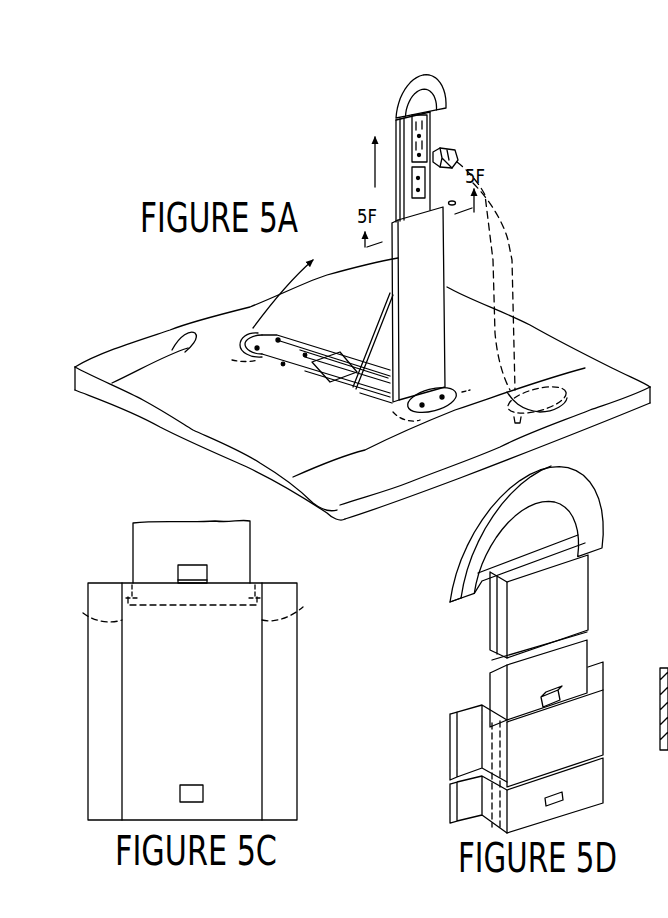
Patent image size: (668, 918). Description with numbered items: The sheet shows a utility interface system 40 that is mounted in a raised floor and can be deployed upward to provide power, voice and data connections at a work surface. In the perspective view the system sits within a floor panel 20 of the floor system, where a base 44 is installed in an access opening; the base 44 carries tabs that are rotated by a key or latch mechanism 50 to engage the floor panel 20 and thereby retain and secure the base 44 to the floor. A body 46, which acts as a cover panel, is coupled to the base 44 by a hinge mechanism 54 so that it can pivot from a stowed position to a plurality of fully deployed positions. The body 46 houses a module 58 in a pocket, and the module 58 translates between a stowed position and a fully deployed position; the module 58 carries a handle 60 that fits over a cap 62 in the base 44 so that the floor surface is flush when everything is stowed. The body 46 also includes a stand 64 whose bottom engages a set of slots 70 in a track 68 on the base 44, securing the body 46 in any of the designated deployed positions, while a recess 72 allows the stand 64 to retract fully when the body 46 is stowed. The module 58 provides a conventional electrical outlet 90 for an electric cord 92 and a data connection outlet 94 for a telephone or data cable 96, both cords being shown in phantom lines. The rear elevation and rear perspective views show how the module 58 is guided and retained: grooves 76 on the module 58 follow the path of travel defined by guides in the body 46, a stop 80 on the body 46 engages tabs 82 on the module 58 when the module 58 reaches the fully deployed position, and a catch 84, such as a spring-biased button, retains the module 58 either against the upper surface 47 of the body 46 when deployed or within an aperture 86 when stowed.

In FIG. 5A, the floor panel 20 is at (568, 353).
In FIG. 5A, the utility interface system 40 is at (500, 131).
In FIG. 5C, the utility interface system 40 is at (118, 530).
In FIG. 5A, the base 44 is at (287, 365).
In FIG. 5A, the body 46 is at (448, 265).
In FIG. 5C, the body 46 is at (298, 675).
In FIG. 5D, the body 46 is at (603, 667).
In FIG. 5D, the upper surface of body 47 is at (598, 683).
In FIG. 5A, the key or latch mechanism 50 is at (280, 338).
In FIG. 5A, the hinge mechanism 54 is at (445, 390).
In FIG. 5A, the module 58 is at (395, 125).
In FIG. 5C, the module 58 is at (250, 548).
In FIG. 5D, the module 58 is at (590, 592).
In FIG. 5A, the handle 60 is at (402, 86).
In FIG. 5D, the handle 60 is at (588, 495).
In FIG. 5A, the cap 62 is at (247, 337).
In FIG. 5A, the stand 64 is at (385, 313).
In FIG. 5A, the track 68 is at (317, 373).
In FIG. 5A, the slots 70 is at (327, 383).
In FIG. 5A, the recess 72 is at (343, 360).
In FIG. 5D, the grooves 76 is at (492, 630).
In FIG. 5C, the stop 80 is at (129, 584).
In FIG. 5C, the tabs 82 is at (196, 600).
In FIG. 5C, the catch 84 is at (193, 573).
In FIG. 5D, the catch 84 is at (548, 690).
In FIG. 5C, the aperture 86 is at (192, 784).
In FIG. 5D, the aperture 86 is at (565, 798).
In FIG. 5A, the electrical outlet 90 is at (425, 132).
In FIG. 5A, the electric cord 92 is at (523, 226).
In FIG. 5A, the data connection outlet 94 is at (426, 188).
In FIG. 5A, the telephone or data cable 96 is at (490, 283).